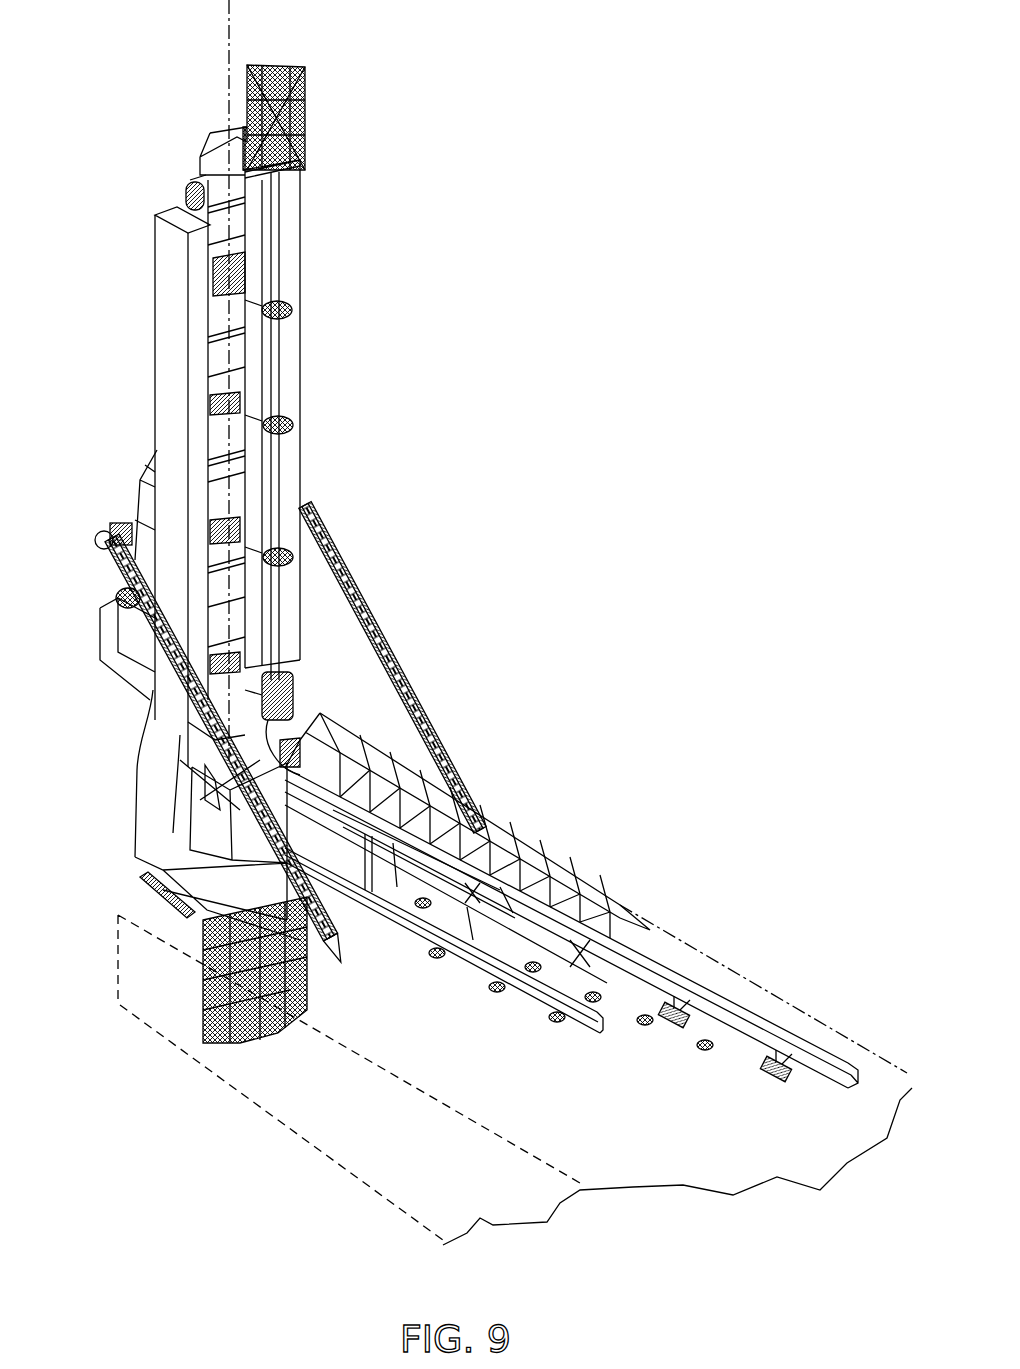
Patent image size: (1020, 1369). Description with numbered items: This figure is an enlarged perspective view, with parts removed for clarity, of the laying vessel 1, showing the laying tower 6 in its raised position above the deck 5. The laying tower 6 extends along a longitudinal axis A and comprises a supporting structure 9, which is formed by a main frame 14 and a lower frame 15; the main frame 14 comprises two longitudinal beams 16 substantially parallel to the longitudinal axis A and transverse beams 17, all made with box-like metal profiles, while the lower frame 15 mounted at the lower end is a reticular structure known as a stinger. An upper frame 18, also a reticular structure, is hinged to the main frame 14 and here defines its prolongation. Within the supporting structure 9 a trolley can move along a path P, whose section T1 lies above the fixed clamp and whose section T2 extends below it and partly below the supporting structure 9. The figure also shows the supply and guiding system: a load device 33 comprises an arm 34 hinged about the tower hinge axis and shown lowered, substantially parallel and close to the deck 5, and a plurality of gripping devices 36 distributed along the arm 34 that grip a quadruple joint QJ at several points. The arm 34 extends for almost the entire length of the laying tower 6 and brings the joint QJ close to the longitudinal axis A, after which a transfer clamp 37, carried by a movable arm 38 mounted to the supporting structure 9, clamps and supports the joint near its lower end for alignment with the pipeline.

The longitudinal axis A is at (227, 80).
The laying tower 6 is at (455, 128).
The upper frame 18 is at (300, 124).
The longitudinal beams 16 is at (290, 260).
The transverse beams 17 is at (177, 208).
The path P is at (290, 352).
The supporting structure 9 is at (310, 404).
The section of path T1 is at (240, 513).
The main frame 14 is at (312, 617).
The transfer clamp 37 is at (326, 688).
The movable arm 38 is at (145, 782).
The laying vessel 1 is at (810, 848).
The quadruple joint QJ is at (647, 1033).
The load device 33 is at (693, 964).
The arm 34 is at (740, 1017).
The deck 5 is at (884, 1072).
The gripping devices 36 is at (677, 1048).
The lower frame 15 is at (200, 1033).
The section of path T2 is at (195, 1172).